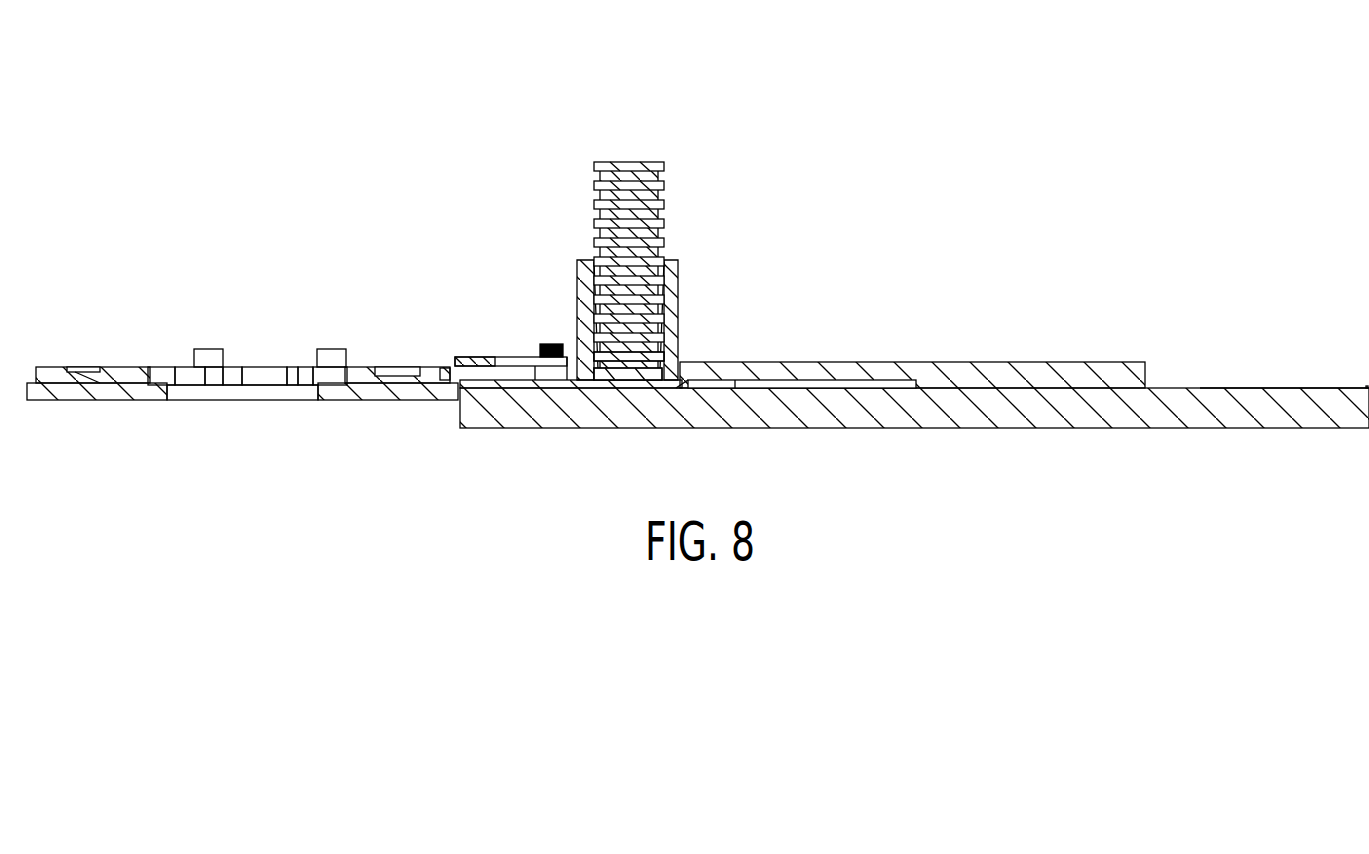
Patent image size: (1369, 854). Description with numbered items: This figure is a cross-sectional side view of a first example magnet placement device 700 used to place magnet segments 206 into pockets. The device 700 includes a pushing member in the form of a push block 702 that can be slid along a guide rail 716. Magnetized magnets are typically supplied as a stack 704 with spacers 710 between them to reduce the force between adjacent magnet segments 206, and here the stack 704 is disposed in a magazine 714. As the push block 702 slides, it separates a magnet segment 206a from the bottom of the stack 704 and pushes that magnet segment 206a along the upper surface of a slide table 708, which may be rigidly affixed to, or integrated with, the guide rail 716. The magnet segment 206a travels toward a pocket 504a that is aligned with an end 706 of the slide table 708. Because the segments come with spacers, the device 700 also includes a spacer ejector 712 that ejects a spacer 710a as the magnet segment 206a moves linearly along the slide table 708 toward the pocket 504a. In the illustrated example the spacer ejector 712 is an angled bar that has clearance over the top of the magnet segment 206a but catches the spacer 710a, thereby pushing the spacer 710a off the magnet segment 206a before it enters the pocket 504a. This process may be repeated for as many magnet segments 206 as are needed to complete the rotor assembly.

The magnet placement device 700 is at (950, 100).
The push block 702 is at (778, 372).
The stack 704 is at (647, 237).
The end 706 is at (458, 388).
The slide table 708 is at (518, 394).
The spacers 710 is at (600, 175).
The spacer 710a is at (632, 378).
The spacer ejector 712 is at (480, 356).
The magazine 714 is at (669, 302).
The guide rail 716 is at (1240, 387).
The magnet segments 206 is at (630, 165).
The magnet segment 206a is at (618, 376).
The pocket 504a is at (432, 380).